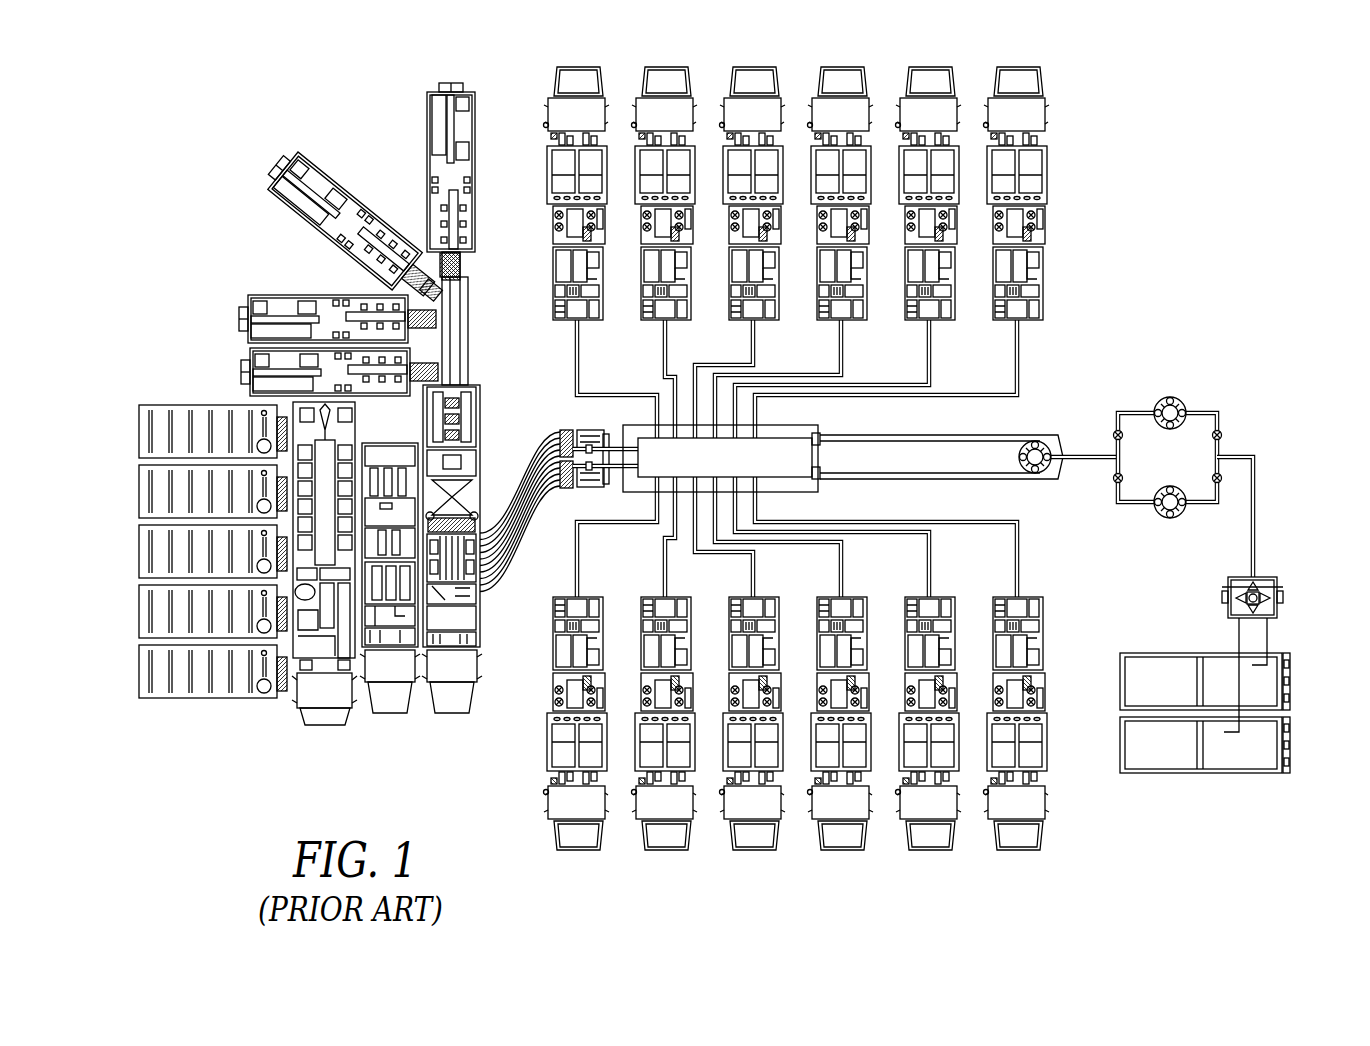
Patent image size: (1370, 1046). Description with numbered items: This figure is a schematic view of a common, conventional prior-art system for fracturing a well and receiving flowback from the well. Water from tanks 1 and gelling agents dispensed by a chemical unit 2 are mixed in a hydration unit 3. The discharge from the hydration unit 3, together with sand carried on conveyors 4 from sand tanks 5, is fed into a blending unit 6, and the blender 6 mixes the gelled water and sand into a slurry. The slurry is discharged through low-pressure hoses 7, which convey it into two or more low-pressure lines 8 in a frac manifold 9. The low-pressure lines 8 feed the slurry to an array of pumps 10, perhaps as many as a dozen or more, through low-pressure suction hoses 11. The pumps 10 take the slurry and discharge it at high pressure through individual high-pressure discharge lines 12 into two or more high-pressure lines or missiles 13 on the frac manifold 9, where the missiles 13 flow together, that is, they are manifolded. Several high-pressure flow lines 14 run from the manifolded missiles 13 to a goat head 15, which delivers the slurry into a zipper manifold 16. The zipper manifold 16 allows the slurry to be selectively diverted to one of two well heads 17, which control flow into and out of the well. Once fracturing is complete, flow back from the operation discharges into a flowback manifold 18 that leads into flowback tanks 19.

The tanks 1 is at (135, 396).
The chemical unit 2 is at (392, 712).
The hydration unit 3 is at (330, 720).
The conveyors 4 is at (457, 350).
The sand tanks 5 is at (455, 86).
The blending unit 6 is at (452, 712).
The low-pressure hoses 7 is at (512, 450).
The low-pressure lines 8 is at (800, 480).
The frac manifold 9 is at (727, 469).
The pumps 10 is at (545, 70).
The suction hoses 11 is at (575, 349).
The discharge lines 12 is at (580, 349).
The missiles 13 is at (800, 433).
The high-pressure flow lines 14 is at (920, 437).
The goat head 15 is at (1050, 470).
The zipper manifold 16 is at (1132, 504).
The well heads 17 is at (1160, 399).
The flowback manifold 18 is at (1283, 597).
The flowback tanks 19 is at (1297, 778).